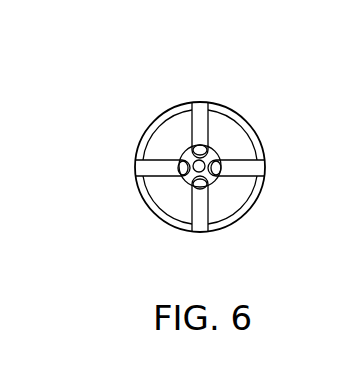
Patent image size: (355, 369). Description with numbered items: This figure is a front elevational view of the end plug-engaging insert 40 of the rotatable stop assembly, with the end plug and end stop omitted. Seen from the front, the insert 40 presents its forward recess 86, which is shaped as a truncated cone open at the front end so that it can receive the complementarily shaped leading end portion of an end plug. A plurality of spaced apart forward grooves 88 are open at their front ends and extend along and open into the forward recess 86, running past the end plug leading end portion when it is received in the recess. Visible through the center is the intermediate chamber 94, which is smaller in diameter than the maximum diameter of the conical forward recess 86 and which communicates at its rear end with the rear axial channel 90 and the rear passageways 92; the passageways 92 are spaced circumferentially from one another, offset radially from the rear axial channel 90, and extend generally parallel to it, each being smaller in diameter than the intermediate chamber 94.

The end plug-engaging insert 40 is at (166, 222).
The forward recess 86 is at (176, 132).
The forward grooves 88 is at (199, 113).
The rear axial channel 90 is at (193, 163).
The rear passageways 92 is at (205, 144).
The intermediate chamber 94 is at (221, 158).